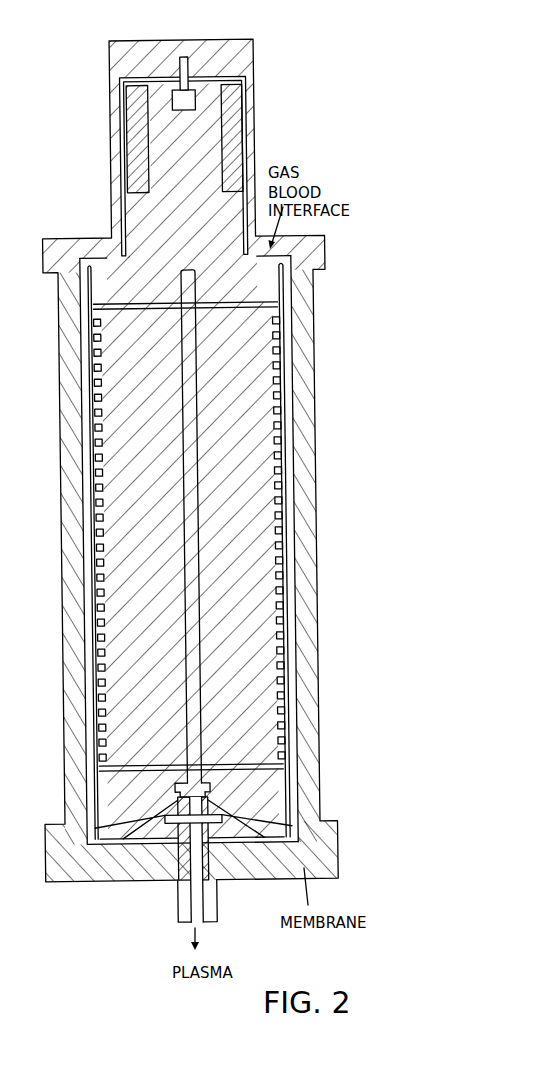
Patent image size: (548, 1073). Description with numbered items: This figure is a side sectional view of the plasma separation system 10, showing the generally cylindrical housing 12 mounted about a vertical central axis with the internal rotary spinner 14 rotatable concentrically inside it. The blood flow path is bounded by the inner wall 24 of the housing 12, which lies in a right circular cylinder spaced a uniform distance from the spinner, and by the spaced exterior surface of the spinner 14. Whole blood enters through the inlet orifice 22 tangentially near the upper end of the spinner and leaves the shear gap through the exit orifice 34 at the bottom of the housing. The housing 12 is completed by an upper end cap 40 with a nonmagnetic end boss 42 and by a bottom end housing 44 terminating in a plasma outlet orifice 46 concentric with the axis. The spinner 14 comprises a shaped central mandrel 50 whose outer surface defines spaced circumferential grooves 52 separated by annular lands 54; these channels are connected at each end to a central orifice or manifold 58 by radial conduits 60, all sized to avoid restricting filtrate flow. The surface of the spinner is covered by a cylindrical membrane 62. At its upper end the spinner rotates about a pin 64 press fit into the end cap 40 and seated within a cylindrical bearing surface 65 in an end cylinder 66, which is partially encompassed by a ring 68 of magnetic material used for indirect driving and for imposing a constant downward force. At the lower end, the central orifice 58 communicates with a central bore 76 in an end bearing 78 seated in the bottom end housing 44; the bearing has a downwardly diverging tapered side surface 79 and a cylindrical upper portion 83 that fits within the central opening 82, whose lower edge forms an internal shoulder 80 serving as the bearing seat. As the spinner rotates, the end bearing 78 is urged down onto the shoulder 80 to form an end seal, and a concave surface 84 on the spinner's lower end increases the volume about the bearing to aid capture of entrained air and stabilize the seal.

The system 10 is at (95, 213).
The cylindrical housing 12 is at (314, 402).
The rotary spinner 14 is at (233, 386).
The inlet orifice 22 is at (93, 297).
The inner wall 24 is at (290, 444).
The exit orifice 34 is at (296, 812).
The upper end cap 40 is at (315, 241).
The end boss 42 is at (256, 52).
The bottom end housing 44 is at (47, 838).
The plasma outlet orifice 46 is at (216, 918).
The central mandrel 50 is at (262, 574).
The circumferential grooves 52 is at (270, 524).
The annular lands 54 is at (285, 489).
The central orifice 58 is at (190, 351).
The radial conduits 60 is at (265, 300).
The cylindrical membrane 62 is at (95, 569).
The pin 64 is at (191, 73).
The cylindrical bearing surface 65 is at (172, 106).
The end cylinder 66 is at (200, 148).
The ring 68 is at (238, 120).
The central bore 76 is at (212, 870).
The end bearing 78 is at (255, 870).
The tapered side surface 79 is at (178, 842).
The internal shoulder 80 is at (209, 812).
The central opening 82 is at (196, 788).
The cylindrical upper portion 83 is at (200, 797).
The concave surface 84 is at (129, 833).